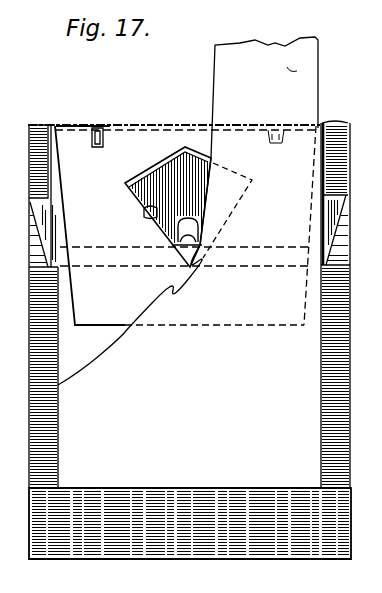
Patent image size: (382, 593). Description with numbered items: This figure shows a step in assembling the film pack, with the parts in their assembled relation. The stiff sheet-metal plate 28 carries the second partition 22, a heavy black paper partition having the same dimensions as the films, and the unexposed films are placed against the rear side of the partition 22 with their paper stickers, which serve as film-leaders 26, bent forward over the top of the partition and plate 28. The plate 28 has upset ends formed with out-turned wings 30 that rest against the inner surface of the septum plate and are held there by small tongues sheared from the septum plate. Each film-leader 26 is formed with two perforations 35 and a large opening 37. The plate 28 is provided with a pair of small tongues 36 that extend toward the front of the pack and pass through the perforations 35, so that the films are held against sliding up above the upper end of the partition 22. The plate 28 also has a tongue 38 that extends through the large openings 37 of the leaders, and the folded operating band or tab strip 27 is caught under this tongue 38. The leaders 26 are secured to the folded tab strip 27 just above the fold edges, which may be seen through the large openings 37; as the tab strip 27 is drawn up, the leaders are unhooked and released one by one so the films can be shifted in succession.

The second partition 22 is at (106, 544).
The sticker (film-leader) 26 is at (134, 146).
The operating band (tab strip) 27 is at (280, 97).
The stiff plate 28 is at (149, 207).
The out-turned wings 30 is at (43, 247).
The perforations 35 is at (86, 138).
The small tongues 36 is at (93, 127).
The large opening 37 is at (141, 221).
The tongue 38 is at (198, 258).